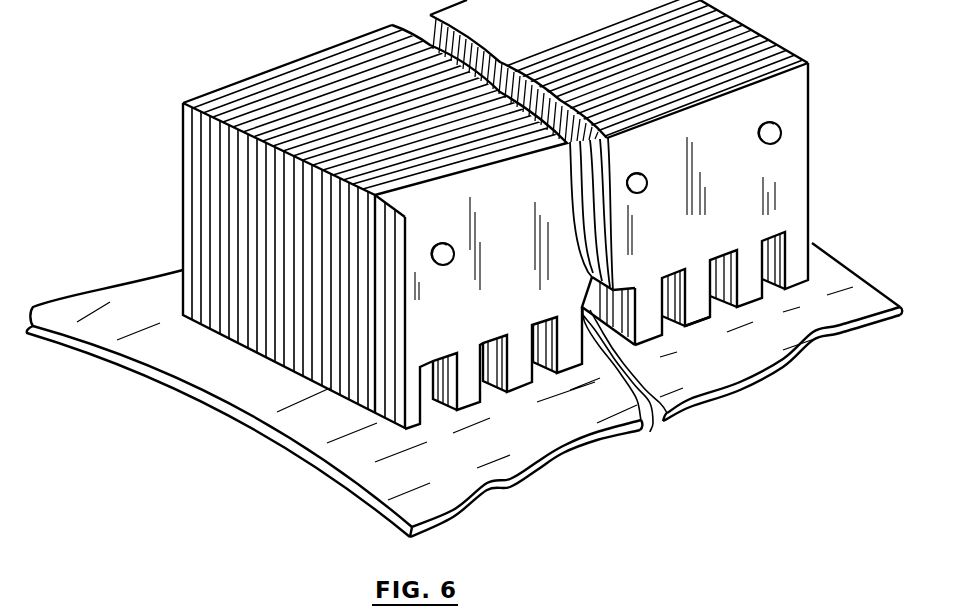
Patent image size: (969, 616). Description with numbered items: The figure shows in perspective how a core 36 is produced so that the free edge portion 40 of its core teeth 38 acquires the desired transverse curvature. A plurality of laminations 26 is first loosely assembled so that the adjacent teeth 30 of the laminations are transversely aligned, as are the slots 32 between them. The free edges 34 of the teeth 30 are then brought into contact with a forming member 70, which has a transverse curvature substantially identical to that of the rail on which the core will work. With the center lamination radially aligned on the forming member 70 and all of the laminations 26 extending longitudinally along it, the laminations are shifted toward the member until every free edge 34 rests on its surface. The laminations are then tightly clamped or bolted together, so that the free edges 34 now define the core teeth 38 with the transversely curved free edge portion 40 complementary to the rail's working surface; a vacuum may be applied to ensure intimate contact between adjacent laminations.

The laminations 26 is at (210, 213).
The teeth 30 is at (423, 412).
The slots 32 is at (497, 393).
The free edges 34 is at (768, 282).
The core 36 is at (533, 259).
The core teeth 38 is at (708, 332).
The free edge portion 40 is at (297, 365).
The forming member 70 is at (352, 507).